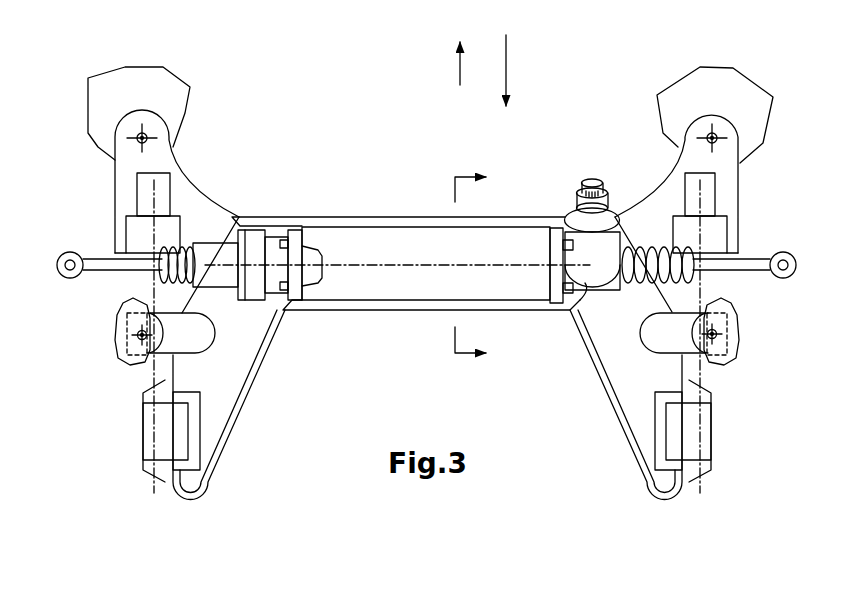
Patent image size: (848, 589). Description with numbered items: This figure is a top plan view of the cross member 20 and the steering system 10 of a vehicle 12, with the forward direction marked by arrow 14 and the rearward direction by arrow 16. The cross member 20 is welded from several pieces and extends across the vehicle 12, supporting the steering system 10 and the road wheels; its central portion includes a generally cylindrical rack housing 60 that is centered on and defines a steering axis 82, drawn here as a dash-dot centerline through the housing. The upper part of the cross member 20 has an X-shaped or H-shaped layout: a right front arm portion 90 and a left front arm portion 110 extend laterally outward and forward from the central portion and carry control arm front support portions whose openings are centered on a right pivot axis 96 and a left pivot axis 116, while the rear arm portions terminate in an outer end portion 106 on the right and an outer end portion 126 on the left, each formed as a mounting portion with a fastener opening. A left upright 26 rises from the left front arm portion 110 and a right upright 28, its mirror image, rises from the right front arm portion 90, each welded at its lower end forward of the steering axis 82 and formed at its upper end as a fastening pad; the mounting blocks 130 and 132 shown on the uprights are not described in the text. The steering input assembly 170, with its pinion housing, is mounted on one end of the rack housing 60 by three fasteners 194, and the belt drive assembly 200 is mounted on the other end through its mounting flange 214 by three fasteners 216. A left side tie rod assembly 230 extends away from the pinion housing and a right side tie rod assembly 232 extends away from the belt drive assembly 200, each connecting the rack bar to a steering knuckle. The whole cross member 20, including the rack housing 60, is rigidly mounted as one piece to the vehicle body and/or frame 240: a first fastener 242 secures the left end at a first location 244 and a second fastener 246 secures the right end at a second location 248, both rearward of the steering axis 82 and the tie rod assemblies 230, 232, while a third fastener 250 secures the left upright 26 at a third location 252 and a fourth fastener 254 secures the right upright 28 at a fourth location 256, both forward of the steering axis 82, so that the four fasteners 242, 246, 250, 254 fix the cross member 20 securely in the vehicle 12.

The steering system 10 is at (488, 371).
The vehicle 12 is at (378, 401).
The arrow indicating forward direction 14 is at (506, 68).
The arrow indicating rearward direction 16 is at (460, 82).
The cross member 20 is at (433, 215).
The left upright 26 is at (650, 340).
The right upright 28 is at (195, 340).
The rack housing 60 is at (382, 303).
The steering axis 82 is at (395, 262).
The right front arm portion 90 is at (209, 470).
The right pivot axis 96 is at (154, 493).
The outer end portion of right rear arm portion 106 is at (114, 195).
The left front arm portion 110 is at (650, 490).
The left pivot axis 116 is at (702, 494).
The outer end portion of left rear arm portion 126 is at (740, 192).
The right mounting block 130 is at (731, 230).
The left mounting block 132 is at (123, 232).
The steering input assembly 170 is at (575, 190).
The fasteners 194 is at (582, 297).
The belt drive assembly 200 is at (254, 303).
The mounting flange 214 is at (296, 228).
The fasteners 216 is at (284, 240).
The left side tie rod assembly 230 is at (782, 278).
The right side tie rod assembly 232 is at (70, 278).
The vehicle body and/or frame 240 is at (416, 86).
The fastener 242 is at (710, 130).
The first location 244 is at (745, 96).
The second fastener 246 is at (148, 133).
The second location 248 is at (107, 108).
The third fastener 250 is at (746, 352).
The third location 252 is at (716, 337).
The fourth fastener 254 is at (99, 369).
The fourth location 256 is at (125, 363).